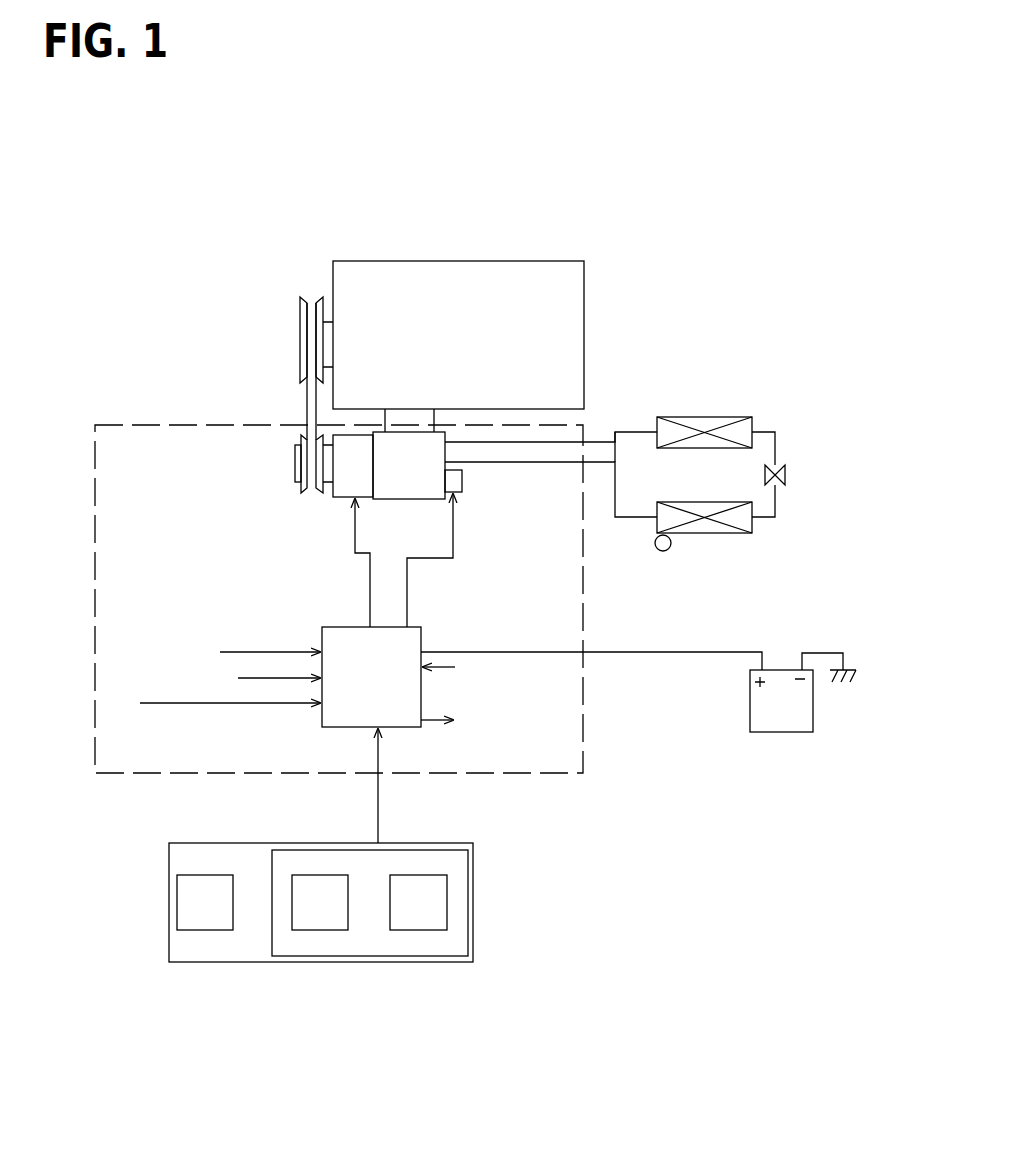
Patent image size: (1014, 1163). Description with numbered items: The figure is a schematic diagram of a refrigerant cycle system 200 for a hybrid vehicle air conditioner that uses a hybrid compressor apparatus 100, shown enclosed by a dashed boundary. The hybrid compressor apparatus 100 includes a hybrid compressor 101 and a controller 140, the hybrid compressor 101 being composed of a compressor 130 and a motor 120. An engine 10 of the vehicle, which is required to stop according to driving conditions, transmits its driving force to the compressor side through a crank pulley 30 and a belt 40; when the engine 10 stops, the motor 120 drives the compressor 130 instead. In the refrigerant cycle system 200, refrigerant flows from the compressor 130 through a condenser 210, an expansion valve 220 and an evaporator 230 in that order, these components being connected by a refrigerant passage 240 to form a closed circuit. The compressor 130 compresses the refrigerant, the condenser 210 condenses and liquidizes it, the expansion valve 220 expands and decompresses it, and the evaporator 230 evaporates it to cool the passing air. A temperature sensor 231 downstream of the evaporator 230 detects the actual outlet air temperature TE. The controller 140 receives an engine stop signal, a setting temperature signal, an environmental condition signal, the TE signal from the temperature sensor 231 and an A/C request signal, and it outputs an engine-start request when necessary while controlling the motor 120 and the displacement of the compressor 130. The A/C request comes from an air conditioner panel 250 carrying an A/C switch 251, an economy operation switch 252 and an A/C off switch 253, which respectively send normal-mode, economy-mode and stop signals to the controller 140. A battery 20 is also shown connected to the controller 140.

The engine 10 is at (508, 261).
The battery 20 is at (757, 692).
The crank pulley 30 is at (303, 322).
The belt 40 is at (307, 402).
The hybrid compressor apparatus 100 is at (95, 462).
The hybrid compressor 101 is at (290, 583).
The motor 120 is at (352, 483).
The compressor 130 is at (383, 502).
The controller 140 is at (338, 627).
The refrigerant cycle system 200 is at (763, 417).
The condenser 210 is at (703, 425).
The expansion valve 220 is at (785, 470).
The evaporator 230 is at (705, 522).
The temperature sensor 231 is at (663, 553).
The refrigerant passage 240 is at (635, 430).
The air conditioner panel 250 is at (193, 843).
The A/C switch 251 is at (303, 930).
The economy operation switch 252 is at (427, 930).
The A/C off switch 253 is at (222, 930).